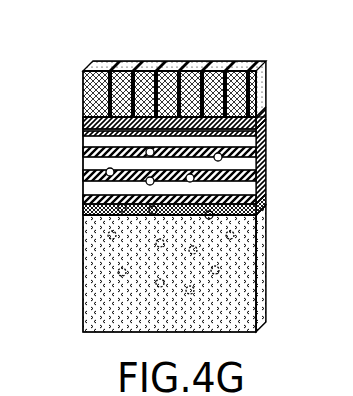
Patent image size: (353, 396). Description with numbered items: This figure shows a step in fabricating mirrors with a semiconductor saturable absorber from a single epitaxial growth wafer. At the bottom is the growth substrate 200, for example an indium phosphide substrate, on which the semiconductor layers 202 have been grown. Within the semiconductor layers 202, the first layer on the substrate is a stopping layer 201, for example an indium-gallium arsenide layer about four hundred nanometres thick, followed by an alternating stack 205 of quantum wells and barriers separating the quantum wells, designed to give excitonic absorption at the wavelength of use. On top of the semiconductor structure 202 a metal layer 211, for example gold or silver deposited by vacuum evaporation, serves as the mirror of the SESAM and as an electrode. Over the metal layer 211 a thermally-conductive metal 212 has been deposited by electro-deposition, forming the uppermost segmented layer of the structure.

The growth substrate 200 is at (76, 217).
The stopping layer 201 is at (267, 202).
The semiconductor layers 202 is at (76, 130).
The alternating stack of quantum wells and barriers 205 is at (272, 190).
The metal layer 211 is at (267, 112).
The thermally-conductive metal 212 is at (267, 64).